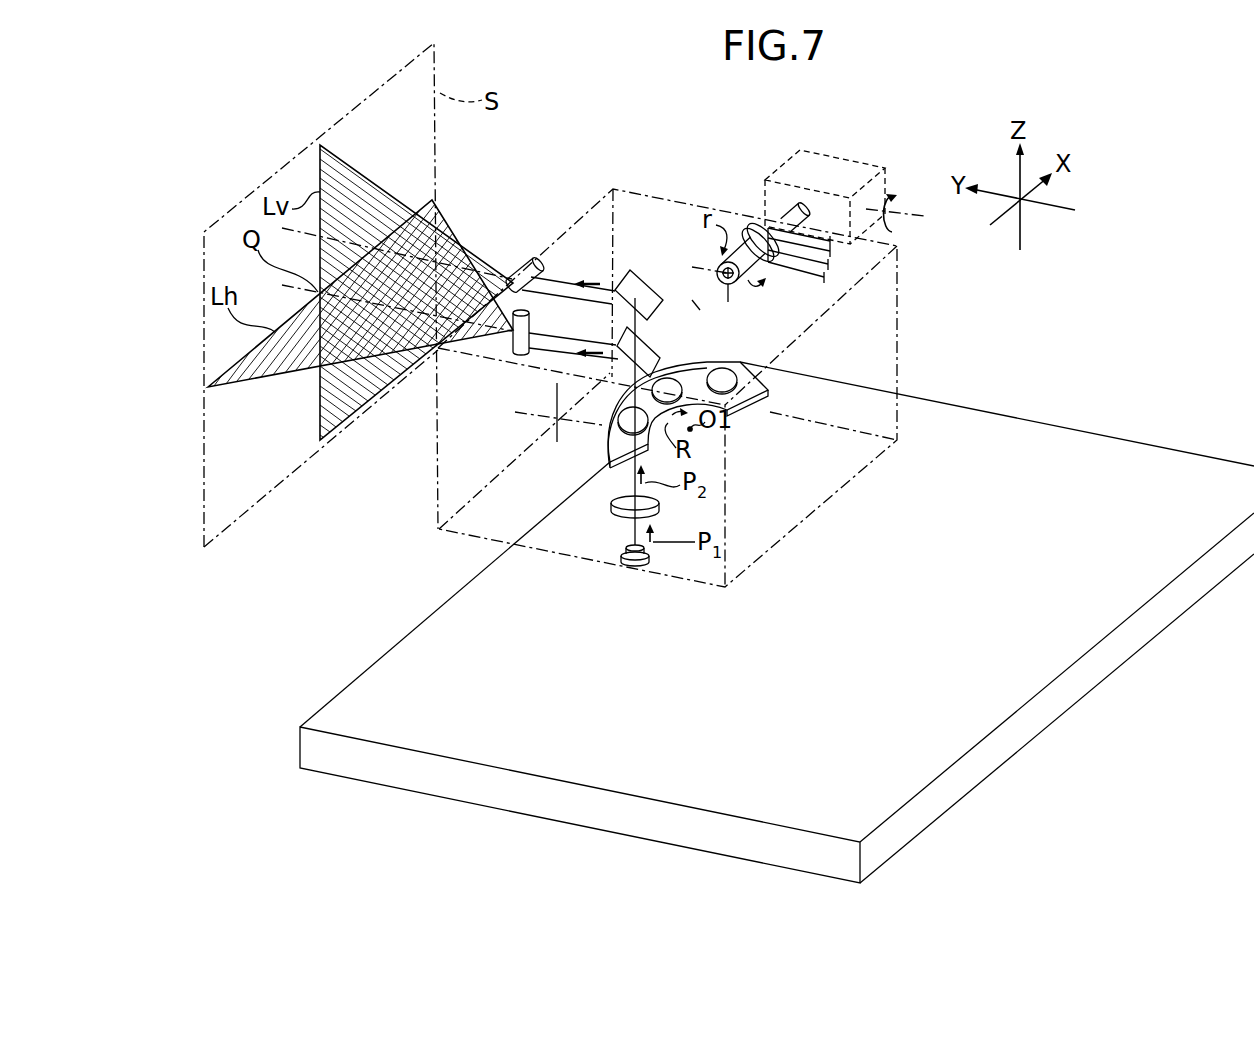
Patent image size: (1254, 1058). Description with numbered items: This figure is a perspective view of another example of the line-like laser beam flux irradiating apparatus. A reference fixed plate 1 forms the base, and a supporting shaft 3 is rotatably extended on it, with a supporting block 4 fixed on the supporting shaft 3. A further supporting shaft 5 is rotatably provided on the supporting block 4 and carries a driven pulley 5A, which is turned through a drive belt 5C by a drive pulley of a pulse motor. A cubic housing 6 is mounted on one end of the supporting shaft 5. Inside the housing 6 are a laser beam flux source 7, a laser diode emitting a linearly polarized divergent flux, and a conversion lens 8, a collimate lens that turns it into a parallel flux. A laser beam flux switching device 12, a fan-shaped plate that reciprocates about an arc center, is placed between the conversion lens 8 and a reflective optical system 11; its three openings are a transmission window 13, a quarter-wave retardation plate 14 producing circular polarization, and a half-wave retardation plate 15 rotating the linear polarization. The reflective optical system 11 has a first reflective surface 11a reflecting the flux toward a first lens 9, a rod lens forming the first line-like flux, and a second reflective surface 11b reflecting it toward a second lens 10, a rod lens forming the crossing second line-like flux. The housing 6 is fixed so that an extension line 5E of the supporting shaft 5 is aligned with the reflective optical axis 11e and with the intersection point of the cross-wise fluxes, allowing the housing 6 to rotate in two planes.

The reference fixed plate 1 is at (593, 747).
The supporting shaft 3 is at (918, 212).
The supporting block 4 is at (793, 170).
The supporting shaft 5 is at (776, 217).
The driven pulley 5A is at (747, 238).
The drive belt 5C is at (818, 238).
The extension line 5E is at (695, 305).
The housing 6 is at (648, 192).
The laser beam flux source 7 is at (632, 566).
The conversion lens 8 is at (660, 510).
The first lens 9 is at (530, 262).
The second lens 10 is at (513, 345).
The reflective optical system 11 is at (635, 352).
The first reflective surface 11a is at (634, 282).
The second reflective surface 11b is at (622, 345).
The reflective optical axis 11e is at (543, 346).
The laser beam flux switching device 12 is at (685, 407).
The transmission window 13 is at (683, 373).
The ¼λ retardation plate 14 is at (606, 428).
The ½λ retardation plate 15 is at (745, 372).